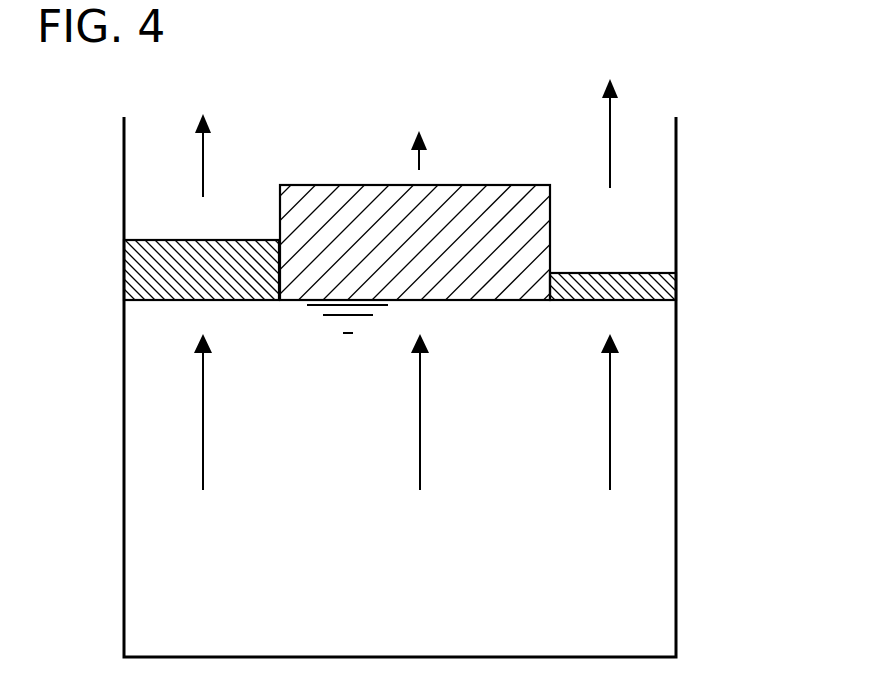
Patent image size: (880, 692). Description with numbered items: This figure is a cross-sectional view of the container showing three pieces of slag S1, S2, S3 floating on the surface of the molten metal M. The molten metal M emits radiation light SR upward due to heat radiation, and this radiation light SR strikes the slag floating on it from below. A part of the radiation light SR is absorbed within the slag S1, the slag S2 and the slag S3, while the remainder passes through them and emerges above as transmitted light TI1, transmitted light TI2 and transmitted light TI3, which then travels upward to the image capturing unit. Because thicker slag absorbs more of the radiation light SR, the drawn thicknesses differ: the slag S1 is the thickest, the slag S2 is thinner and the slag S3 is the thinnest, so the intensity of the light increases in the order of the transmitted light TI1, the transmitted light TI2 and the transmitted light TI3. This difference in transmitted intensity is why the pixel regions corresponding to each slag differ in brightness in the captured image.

The molten metal M is at (650, 575).
The slag S1 is at (352, 195).
The slag S2 is at (161, 250).
The slag S3 is at (578, 283).
The transmitted light TI1 is at (420, 162).
The transmitted light TI2 is at (204, 170).
The transmitted light TI3 is at (611, 122).
The radiation light SR is at (204, 408).